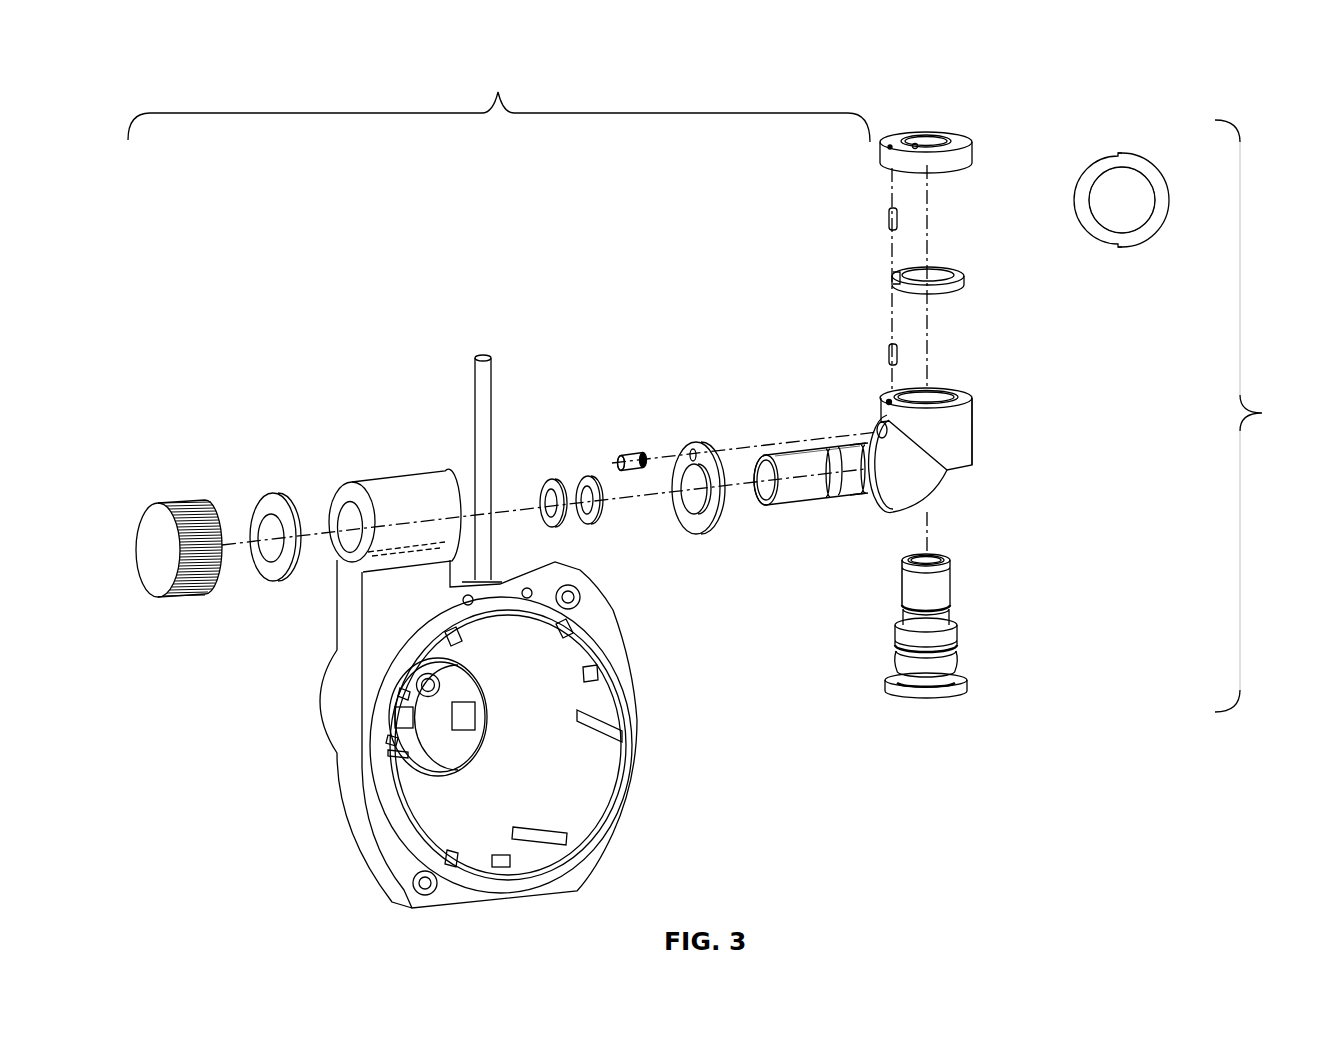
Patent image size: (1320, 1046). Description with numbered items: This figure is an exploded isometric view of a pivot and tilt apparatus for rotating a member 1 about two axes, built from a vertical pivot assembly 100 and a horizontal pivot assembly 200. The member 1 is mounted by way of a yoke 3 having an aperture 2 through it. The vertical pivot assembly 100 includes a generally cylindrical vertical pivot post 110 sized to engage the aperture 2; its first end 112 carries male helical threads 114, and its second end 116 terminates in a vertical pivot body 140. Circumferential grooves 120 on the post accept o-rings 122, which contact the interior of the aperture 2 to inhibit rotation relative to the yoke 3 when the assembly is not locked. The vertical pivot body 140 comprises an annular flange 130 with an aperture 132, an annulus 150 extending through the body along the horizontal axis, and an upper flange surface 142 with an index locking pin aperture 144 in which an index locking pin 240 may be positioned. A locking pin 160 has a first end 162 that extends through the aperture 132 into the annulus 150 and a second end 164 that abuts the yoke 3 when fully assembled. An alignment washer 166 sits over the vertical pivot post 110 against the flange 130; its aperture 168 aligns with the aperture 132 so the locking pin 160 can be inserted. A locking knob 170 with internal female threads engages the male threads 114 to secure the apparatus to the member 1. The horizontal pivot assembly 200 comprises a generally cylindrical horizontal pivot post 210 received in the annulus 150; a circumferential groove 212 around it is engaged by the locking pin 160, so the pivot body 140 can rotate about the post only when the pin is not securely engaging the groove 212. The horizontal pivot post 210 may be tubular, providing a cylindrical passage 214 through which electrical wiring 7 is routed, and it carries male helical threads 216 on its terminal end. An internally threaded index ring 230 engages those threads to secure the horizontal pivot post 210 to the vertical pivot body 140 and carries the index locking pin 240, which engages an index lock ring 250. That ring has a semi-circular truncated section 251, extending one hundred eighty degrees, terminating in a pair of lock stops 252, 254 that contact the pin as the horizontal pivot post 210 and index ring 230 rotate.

The member 1 is at (377, 652).
The aperture 2 is at (330, 515).
The yoke 3 is at (373, 462).
The electrical wiring 7 is at (475, 407).
The vertical pivot assembly 100 is at (499, 103).
The vertical pivot post 110 is at (815, 490).
The first end 112 is at (792, 458).
The male helical threads 114 is at (763, 507).
The second end 116 is at (862, 438).
The circumferential groove 120 is at (863, 497).
The o-rings 122 is at (583, 487).
The annular flange 130 is at (893, 516).
The aperture 132 is at (880, 425).
The vertical pivot body 140 is at (963, 433).
The upper flange surface 142 is at (967, 400).
The index locking pin aperture 144 is at (888, 400).
The annulus 150 is at (940, 390).
The locking pin 160 is at (634, 432).
The first end 162 is at (645, 463).
The second end 164 is at (622, 465).
The alignment washer 166 is at (693, 520).
The aperture 168 is at (693, 452).
The locking knob 170 is at (163, 588).
The horizontal pivot assembly 200 is at (1261, 416).
The horizontal pivot post 210 is at (945, 587).
The circumferential groove 212 is at (957, 657).
The cylindrical passage 214 is at (937, 553).
The male helical threads 216 is at (902, 567).
The index ring 230 is at (930, 142).
The index locking pin 240 is at (887, 223).
The index lock ring 250 is at (953, 268).
The semi-circular truncated section 251 is at (1086, 185).
The lock stop 252 is at (1120, 155).
The lock stop 254 is at (1120, 246).